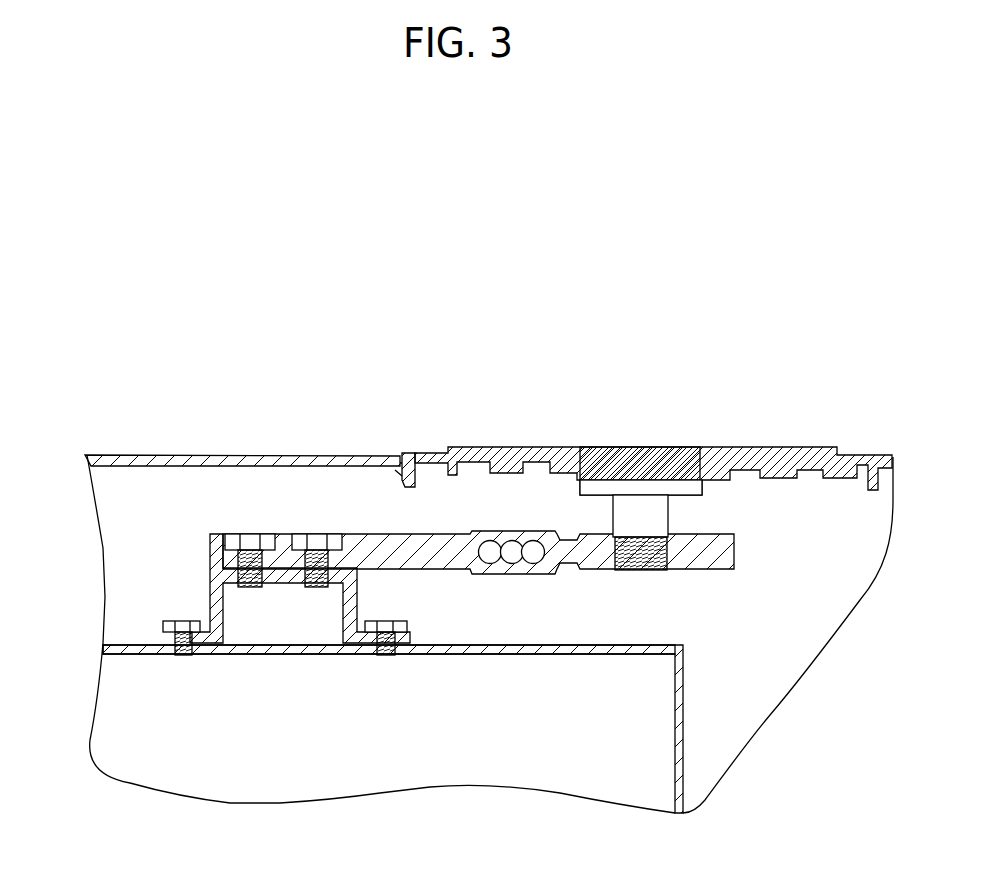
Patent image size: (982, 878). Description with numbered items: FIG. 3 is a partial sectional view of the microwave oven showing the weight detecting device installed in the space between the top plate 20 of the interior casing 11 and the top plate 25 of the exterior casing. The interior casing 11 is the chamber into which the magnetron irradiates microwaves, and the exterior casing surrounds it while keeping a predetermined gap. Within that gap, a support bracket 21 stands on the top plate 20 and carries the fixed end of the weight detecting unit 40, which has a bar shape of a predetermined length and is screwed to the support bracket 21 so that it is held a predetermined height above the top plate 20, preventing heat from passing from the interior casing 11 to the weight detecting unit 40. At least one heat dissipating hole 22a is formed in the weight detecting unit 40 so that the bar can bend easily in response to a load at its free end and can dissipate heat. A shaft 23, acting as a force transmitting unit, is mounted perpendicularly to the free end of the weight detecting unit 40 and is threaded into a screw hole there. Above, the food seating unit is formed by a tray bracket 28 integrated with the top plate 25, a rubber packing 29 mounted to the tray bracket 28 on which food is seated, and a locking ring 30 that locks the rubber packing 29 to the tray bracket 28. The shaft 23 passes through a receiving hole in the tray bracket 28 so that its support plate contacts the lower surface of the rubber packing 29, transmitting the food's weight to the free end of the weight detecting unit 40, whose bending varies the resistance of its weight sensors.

The interior casing 11 is at (693, 747).
The top plate of the interior casing 20 is at (425, 654).
The support bracket 21 is at (210, 597).
The heat dissipating hole 22a is at (517, 573).
The shaft 23 is at (663, 518).
The top plate of the exterior casing 25 is at (257, 456).
The tray bracket 28 is at (812, 452).
The rubber packing 29 is at (593, 447).
The locking ring 30 is at (403, 455).
The weight detecting unit 40 is at (210, 548).